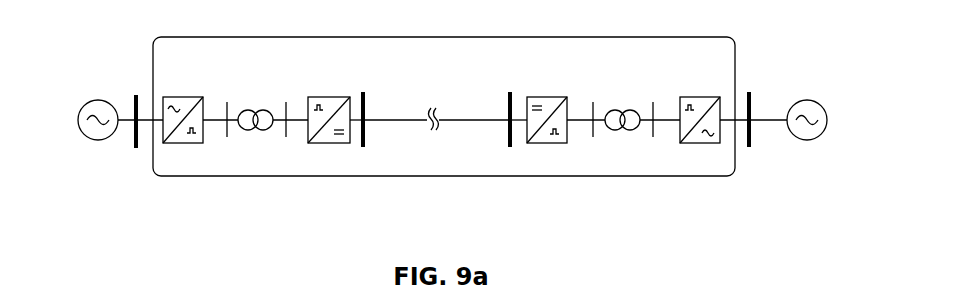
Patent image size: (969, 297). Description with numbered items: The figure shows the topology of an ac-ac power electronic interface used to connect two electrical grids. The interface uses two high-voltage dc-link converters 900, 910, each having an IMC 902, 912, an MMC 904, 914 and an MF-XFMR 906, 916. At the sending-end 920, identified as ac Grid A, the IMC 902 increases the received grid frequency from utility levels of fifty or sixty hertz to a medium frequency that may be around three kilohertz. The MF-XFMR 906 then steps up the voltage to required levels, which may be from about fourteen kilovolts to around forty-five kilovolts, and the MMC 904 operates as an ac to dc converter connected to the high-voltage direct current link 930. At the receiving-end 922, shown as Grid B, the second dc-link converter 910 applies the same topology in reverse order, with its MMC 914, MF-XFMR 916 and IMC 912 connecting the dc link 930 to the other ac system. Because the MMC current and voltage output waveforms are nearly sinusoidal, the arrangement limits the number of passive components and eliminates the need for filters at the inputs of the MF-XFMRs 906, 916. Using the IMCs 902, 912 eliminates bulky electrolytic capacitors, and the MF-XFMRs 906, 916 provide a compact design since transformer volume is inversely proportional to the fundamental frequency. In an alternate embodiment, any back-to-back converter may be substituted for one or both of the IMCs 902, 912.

The high-voltage dc-link converter 900 is at (250, 180).
The IMC 902 is at (183, 144).
The MMC 904 is at (327, 144).
The MF-XFMR 906 is at (245, 131).
The high-voltage dc-link converter 910 is at (640, 180).
The IMC 912 is at (698, 144).
The MMC 914 is at (550, 144).
The MF-XFMR 916 is at (620, 131).
The sending-end 920 is at (98, 141).
The receiving-end 922 is at (805, 141).
The high-voltage direct current link 930 is at (465, 120).